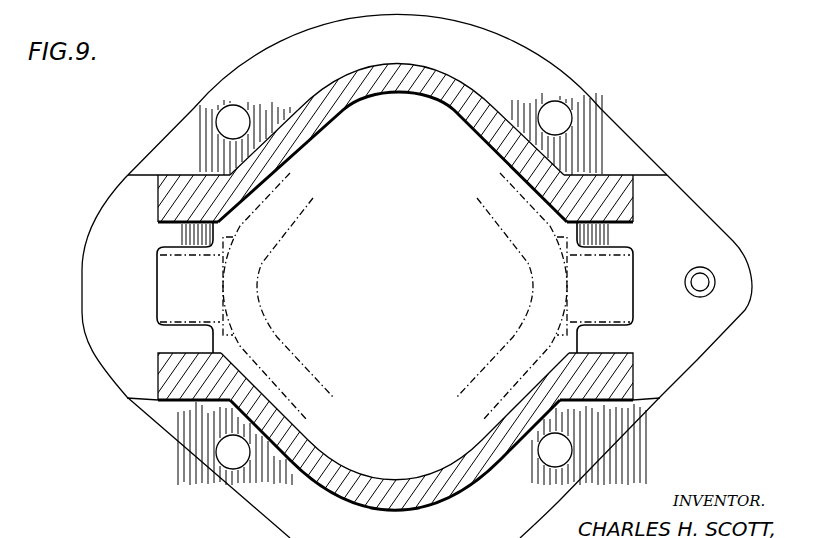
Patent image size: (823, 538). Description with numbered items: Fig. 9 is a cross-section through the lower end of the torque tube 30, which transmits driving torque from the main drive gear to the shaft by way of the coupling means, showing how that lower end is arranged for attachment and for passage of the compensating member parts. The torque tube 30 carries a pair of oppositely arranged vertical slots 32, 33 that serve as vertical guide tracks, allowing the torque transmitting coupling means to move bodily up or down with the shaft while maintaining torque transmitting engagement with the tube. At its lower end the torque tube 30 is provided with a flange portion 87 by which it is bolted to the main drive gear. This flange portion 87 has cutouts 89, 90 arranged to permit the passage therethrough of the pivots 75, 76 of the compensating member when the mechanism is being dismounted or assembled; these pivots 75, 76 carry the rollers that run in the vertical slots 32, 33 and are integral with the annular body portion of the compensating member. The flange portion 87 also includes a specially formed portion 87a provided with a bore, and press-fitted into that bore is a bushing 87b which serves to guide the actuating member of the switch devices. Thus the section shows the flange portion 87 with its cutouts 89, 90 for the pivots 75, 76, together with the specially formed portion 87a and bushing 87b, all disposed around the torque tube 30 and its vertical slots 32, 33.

The torque tube 30 is at (477, 77).
The flange portion 87 is at (181, 127).
The specially formed portion 87a is at (713, 252).
The bushing 87b is at (698, 297).
The vertical slot 33 is at (172, 223).
The vertical slot 32 is at (620, 222).
The cutout 90 is at (183, 324).
The cutout 89 is at (610, 321).
The pivot 76 is at (200, 253).
The pivot 75 is at (593, 251).